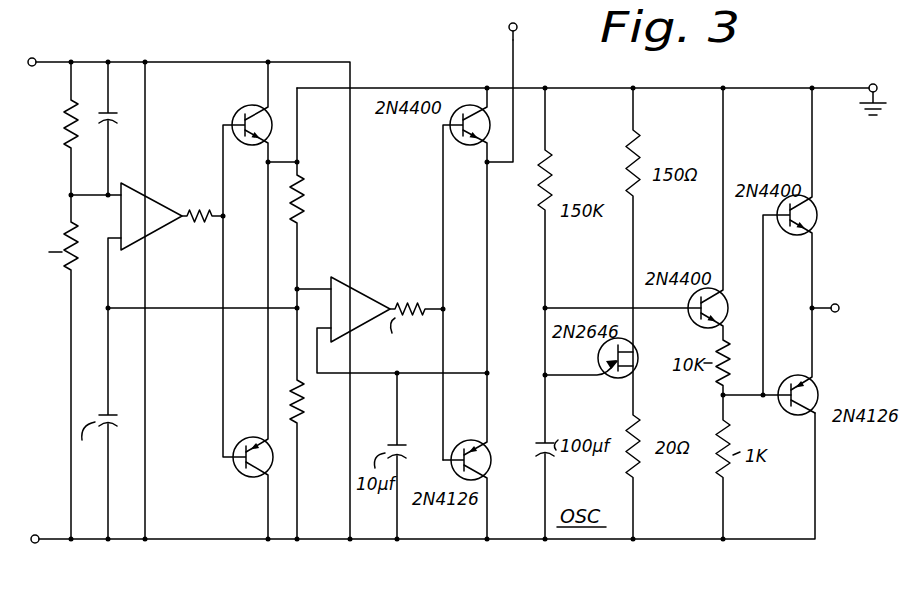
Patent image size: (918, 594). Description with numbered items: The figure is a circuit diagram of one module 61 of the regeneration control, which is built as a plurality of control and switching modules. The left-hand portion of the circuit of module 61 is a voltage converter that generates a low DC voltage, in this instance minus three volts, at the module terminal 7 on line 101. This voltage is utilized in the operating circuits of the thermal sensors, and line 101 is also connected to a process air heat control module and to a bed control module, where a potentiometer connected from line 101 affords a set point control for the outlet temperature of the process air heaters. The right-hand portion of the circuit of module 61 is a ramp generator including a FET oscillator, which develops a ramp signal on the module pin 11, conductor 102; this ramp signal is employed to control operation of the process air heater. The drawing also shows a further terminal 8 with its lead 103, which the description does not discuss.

The module 61 is at (362, 44).
The module terminal 7 is at (511, 20).
The line 101 is at (515, 50).
The ground terminal 8 is at (877, 96).
The lead 103 is at (848, 90).
The conductor 102 is at (826, 304).
The module pin 11 is at (850, 313).